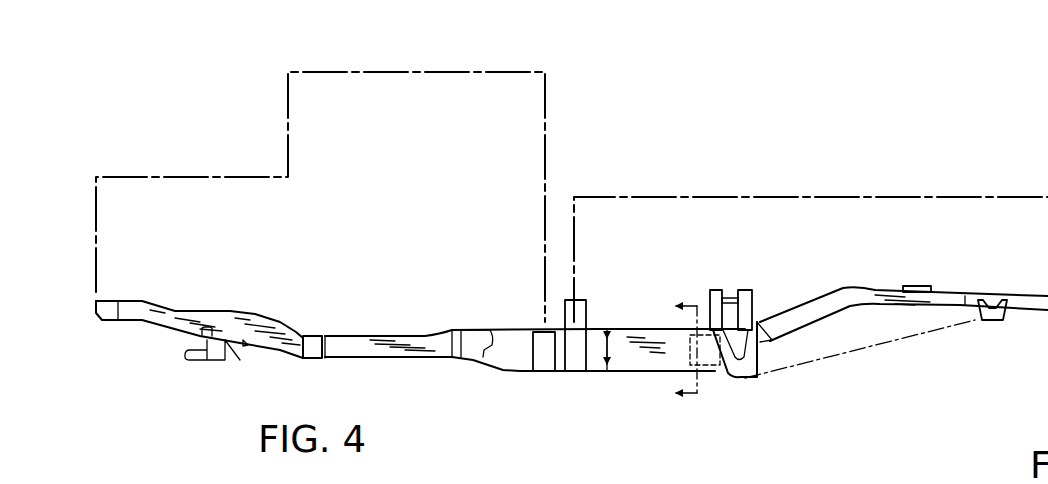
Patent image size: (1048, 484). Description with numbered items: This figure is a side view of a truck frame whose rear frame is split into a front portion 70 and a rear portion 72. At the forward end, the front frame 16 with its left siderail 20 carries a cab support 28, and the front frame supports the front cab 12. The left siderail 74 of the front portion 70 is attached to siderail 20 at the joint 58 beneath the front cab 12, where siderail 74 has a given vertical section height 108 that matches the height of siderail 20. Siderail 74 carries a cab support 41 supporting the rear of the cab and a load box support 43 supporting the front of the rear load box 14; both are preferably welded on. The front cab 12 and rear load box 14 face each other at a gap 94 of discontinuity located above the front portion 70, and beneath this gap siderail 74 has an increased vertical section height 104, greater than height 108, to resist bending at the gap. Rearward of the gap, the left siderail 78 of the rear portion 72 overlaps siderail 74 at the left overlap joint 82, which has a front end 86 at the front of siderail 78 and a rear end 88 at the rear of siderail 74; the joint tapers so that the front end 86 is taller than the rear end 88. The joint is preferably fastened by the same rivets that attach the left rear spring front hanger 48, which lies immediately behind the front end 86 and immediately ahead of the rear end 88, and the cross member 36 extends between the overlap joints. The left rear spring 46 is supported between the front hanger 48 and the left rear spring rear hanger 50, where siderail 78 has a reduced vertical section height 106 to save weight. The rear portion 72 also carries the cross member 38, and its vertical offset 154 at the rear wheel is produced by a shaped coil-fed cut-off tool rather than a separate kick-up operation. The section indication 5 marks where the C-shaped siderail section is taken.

The front cab 12 is at (427, 72).
The rear load box 14 is at (862, 197).
The gap of discontinuity 94 is at (558, 194).
The front frame 16 is at (350, 368).
The cab support 28 is at (310, 336).
The left siderail 20 is at (380, 338).
The joint 58 is at (483, 332).
The vertical section height 108 is at (453, 350).
The left siderail 74 is at (506, 330).
The cab support 41 is at (540, 332).
The load box support 43 is at (577, 300).
The increased vertical section height 104 is at (607, 355).
The front portion 70 is at (619, 387).
The section line 5- 5 is at (673, 350).
The front end 86 is at (690, 349).
The left overlap joint 82 is at (711, 364).
The cross member 36 is at (748, 290).
The left rear spring front hanger 48 is at (742, 372).
The rear end 88 is at (782, 320).
The left rear spring 46 is at (878, 348).
The rear portion 72 is at (848, 379).
The vertical offset 154 is at (843, 292).
The left siderail 78 is at (880, 295).
The cross member 38 is at (918, 287).
The reduced vertical section height 106 is at (952, 302).
The left rear spring rear hanger 50 is at (1000, 320).